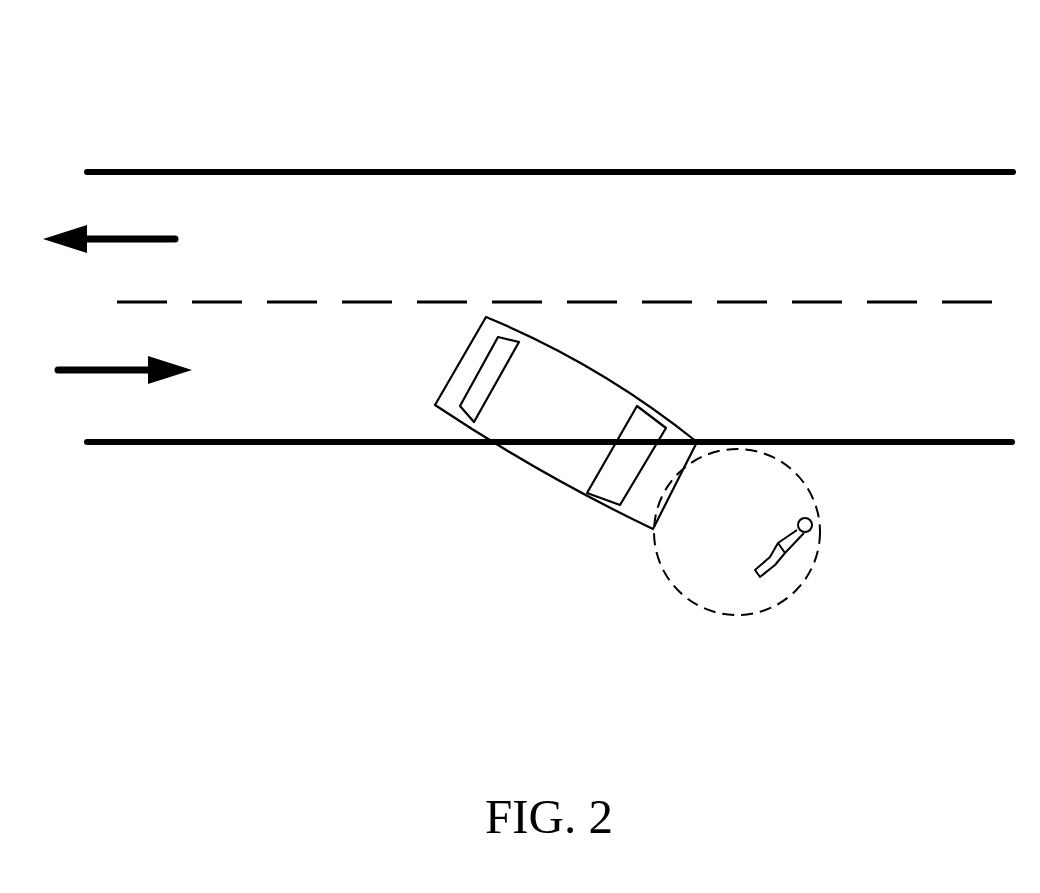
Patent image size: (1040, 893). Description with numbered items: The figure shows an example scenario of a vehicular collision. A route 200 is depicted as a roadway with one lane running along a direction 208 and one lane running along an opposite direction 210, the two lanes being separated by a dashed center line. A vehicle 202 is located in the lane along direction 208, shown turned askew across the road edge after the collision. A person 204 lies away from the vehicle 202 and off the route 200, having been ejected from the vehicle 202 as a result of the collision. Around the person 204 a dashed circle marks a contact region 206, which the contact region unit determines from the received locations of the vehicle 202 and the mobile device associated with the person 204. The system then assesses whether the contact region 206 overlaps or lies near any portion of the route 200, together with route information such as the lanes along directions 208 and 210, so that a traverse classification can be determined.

The route 200 is at (815, 75).
The vehicle 202 is at (607, 378).
The person 204 is at (776, 546).
The contact region 206 is at (822, 530).
The direction 208 is at (168, 363).
The direction 210 is at (168, 235).